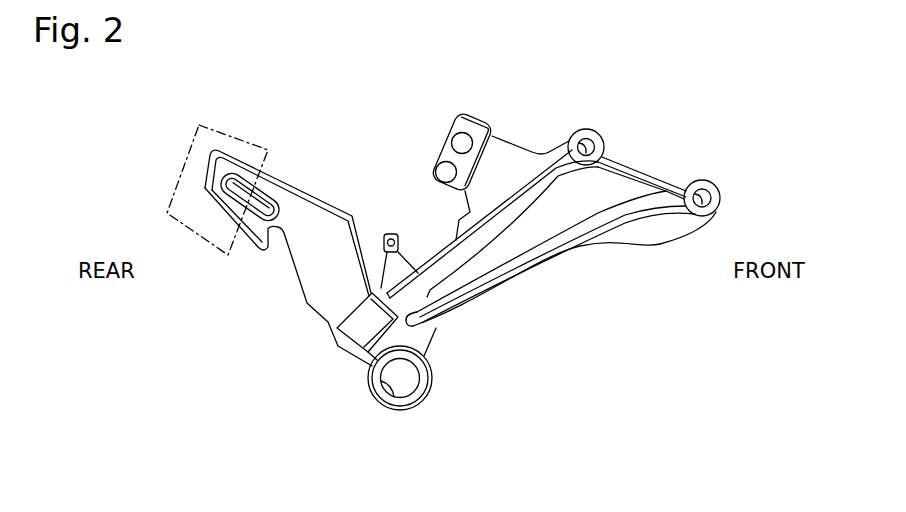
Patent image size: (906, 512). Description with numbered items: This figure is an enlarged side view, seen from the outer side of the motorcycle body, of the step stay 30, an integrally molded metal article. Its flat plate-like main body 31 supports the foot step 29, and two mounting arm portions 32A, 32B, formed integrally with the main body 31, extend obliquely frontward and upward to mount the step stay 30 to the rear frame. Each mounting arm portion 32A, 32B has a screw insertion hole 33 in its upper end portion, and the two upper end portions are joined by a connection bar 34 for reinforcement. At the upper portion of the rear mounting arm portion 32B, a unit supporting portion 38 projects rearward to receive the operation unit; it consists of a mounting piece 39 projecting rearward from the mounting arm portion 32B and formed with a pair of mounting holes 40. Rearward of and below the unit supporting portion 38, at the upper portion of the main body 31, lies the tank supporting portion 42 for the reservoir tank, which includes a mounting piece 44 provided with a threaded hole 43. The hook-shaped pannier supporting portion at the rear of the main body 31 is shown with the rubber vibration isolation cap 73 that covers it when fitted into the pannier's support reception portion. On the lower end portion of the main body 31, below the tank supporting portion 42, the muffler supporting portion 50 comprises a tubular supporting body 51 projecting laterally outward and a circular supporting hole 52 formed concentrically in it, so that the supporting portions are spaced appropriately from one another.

The foot step 29 is at (363, 332).
The step stay 30 is at (562, 225).
The main body 31 is at (322, 291).
The mounting arm portion 32A is at (627, 240).
The rear mounting arm portion 32B is at (523, 205).
The screw insertion hole 33 is at (643, 155).
The connection bar 34 is at (650, 172).
The unit supporting portion 38 is at (469, 152).
The mounting piece 39 is at (460, 128).
The mounting holes 40 is at (462, 140).
The tank supporting portion 42 is at (395, 232).
The threaded hole 43 is at (388, 238).
The mounting piece 44 is at (399, 248).
The muffler supporting portion 50 is at (400, 417).
The tubular supporting body 51 is at (417, 398).
The circular supporting hole 52 is at (389, 406).
The rubber vibration isolation cap 73 is at (236, 134).